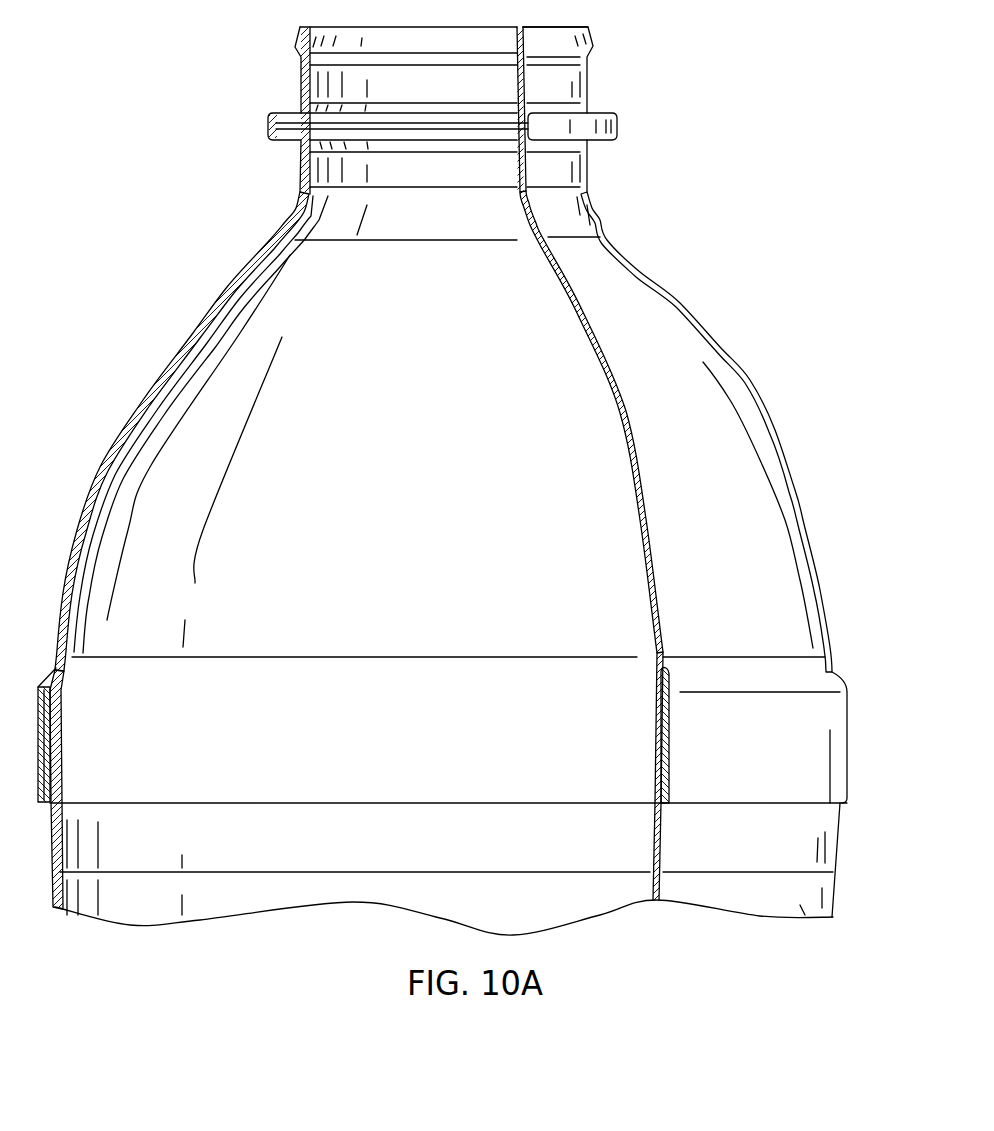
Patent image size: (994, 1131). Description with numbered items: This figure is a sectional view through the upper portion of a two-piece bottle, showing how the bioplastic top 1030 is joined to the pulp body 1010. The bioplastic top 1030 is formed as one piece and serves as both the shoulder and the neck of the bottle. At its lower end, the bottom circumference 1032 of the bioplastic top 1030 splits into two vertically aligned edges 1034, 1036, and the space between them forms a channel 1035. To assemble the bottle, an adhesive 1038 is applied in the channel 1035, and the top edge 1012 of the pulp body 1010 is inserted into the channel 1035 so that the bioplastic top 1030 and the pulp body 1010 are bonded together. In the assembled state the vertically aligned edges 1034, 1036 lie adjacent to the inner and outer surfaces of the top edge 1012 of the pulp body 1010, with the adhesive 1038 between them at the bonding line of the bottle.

The bioplastic top 1030 is at (688, 296).
The bottom circumference 1032 is at (690, 750).
The vertically aligned edge 1034 is at (40, 798).
The channel 1035 is at (63, 703).
The vertically aligned edge 1036 is at (63, 715).
The adhesive 1038 is at (50, 740).
The pulp body 1010 is at (362, 893).
The top edge 1012 is at (717, 853).